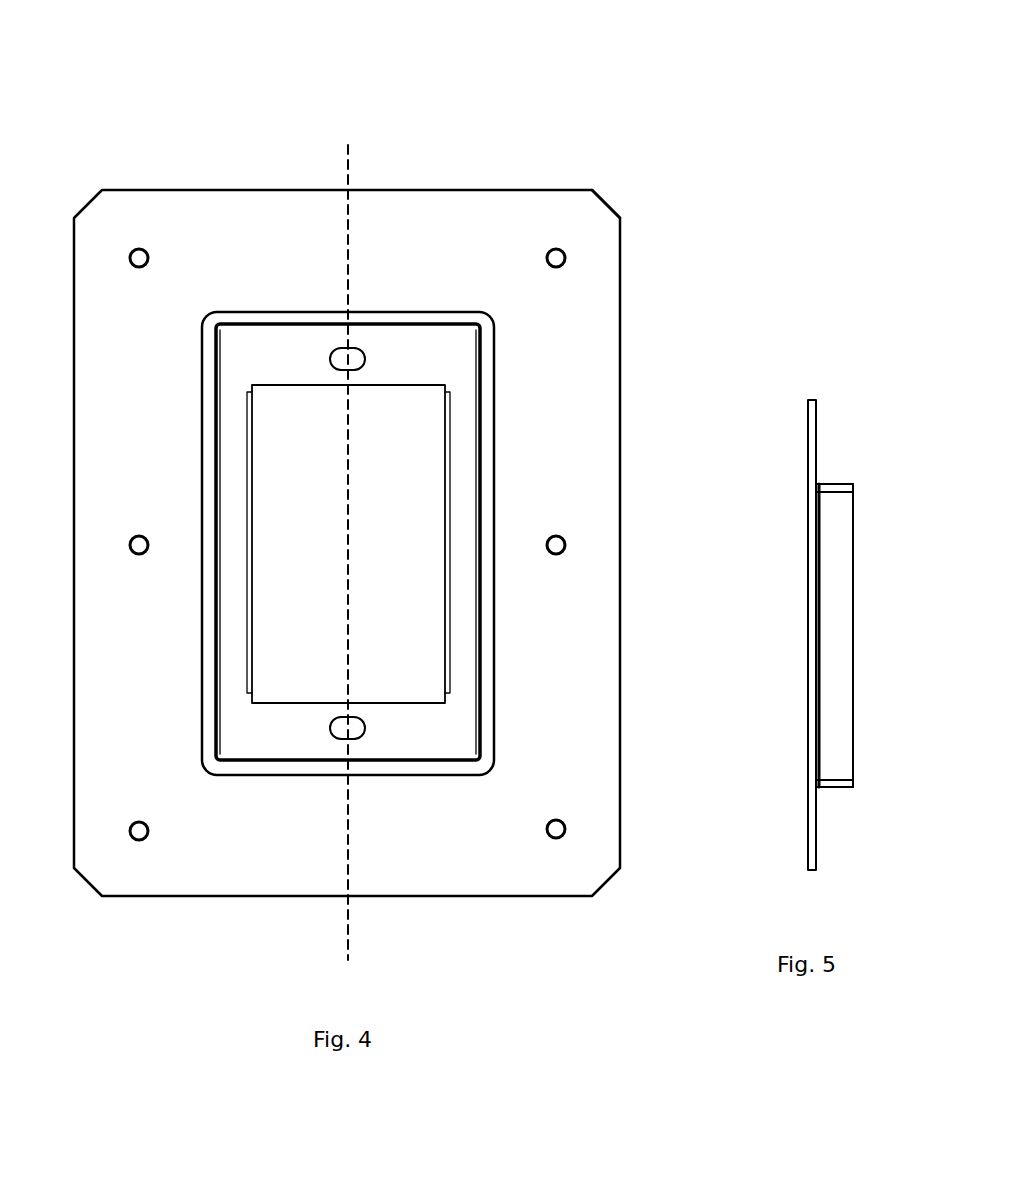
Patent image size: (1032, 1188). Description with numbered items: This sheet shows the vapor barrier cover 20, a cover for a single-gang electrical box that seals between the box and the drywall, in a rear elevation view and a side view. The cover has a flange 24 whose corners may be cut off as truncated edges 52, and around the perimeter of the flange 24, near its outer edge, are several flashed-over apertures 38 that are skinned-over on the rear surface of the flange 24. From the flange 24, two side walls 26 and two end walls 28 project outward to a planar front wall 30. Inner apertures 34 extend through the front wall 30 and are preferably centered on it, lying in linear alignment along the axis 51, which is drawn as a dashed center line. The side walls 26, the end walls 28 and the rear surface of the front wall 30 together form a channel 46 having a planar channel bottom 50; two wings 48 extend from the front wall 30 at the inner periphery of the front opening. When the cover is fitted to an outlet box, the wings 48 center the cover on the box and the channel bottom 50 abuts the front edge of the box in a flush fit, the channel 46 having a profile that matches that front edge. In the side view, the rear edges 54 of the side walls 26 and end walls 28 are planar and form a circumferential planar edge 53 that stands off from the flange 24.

In FIG. 4, the vapor barrier cover 20 is at (118, 142).
In FIG. 4, the flange 24 is at (590, 290).
In FIG. 5, the flange 24 is at (816, 418).
In FIG. 4, the side walls 26 is at (253, 632).
In FIG. 5, the side walls 26 is at (836, 678).
In FIG. 4, the end walls 28 is at (258, 327).
In FIG. 5, the end walls 28 is at (834, 787).
In FIG. 4, the front wall 30 is at (447, 747).
In FIG. 4, the inner aperture 34 is at (365, 359).
In FIG. 4, the flashed-over aperture 38 is at (556, 829).
In FIG. 4, the channel 46 is at (470, 680).
In FIG. 4, the wings 48 is at (450, 447).
In FIG. 4, the channel bottom 50 is at (458, 510).
In FIG. 4, the axis 51 is at (348, 928).
In FIG. 4, the truncated edges 52 is at (608, 204).
In FIG. 5, the circumferential planar edge 53 is at (853, 635).
In FIG. 5, the rear edges 54 is at (853, 487).